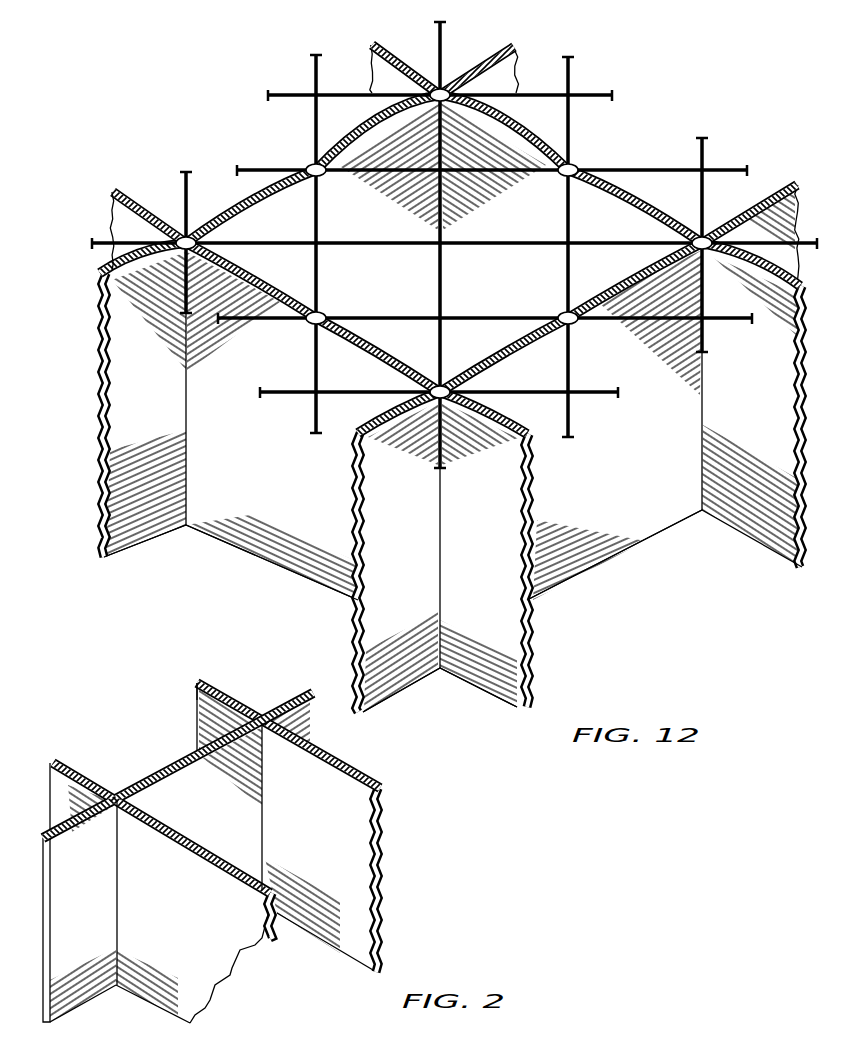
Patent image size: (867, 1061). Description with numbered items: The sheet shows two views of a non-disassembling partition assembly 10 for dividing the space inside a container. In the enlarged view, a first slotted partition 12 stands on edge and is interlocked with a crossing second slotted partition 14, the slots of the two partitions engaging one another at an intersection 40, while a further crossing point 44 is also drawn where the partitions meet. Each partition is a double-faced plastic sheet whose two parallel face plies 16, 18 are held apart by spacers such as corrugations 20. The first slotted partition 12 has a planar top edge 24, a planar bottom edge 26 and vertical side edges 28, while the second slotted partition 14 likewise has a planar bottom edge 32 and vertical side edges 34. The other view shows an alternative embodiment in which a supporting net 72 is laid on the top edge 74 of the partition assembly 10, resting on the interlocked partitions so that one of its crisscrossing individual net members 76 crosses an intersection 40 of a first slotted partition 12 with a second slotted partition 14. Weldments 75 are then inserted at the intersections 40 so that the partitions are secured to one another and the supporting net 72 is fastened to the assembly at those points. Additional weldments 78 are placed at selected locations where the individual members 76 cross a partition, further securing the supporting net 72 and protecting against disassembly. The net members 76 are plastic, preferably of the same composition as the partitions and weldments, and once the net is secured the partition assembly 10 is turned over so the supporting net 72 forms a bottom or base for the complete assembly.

In FIG. 12, the partition assembly 10 is at (566, 598).
In FIG. 2, the partition assembly 10 is at (114, 684).
In FIG. 12, the first slotted partition 12 is at (237, 543).
In FIG. 2, the first slotted partition 12 is at (367, 771).
In FIG. 2, the second slotted partition 14 is at (277, 702).
In FIG. 12, the face ply 16 is at (262, 481).
In FIG. 2, the face ply 16 is at (243, 845).
In FIG. 12, the face ply 18 is at (808, 290).
In FIG. 2, the face ply 18 is at (162, 768).
In FIG. 12, the corrugation 20 is at (150, 205).
In FIG. 12, the planar top edge 24 is at (275, 588).
In FIG. 2, the planar bottom edge 26 is at (330, 948).
In FIG. 2, the vertical side edge 28 is at (197, 688).
In FIG. 2, the planar bottom edge 32 is at (87, 993).
In FIG. 2, the vertical side edge 34 is at (45, 893).
In FIG. 12, the intersection 40 is at (428, 440).
In FIG. 2, the intersection 40 is at (262, 778).
In FIG. 2, the interlocking slot 44 is at (117, 795).
In FIG. 12, the supporting net 72 is at (454, 245).
In FIG. 12, the top edge 74 is at (637, 167).
In FIG. 12, the weldment 75 is at (430, 383).
In FIG. 12, the individual net member 76 is at (310, 165).
In FIG. 12, the additional weldment 78 is at (580, 160).